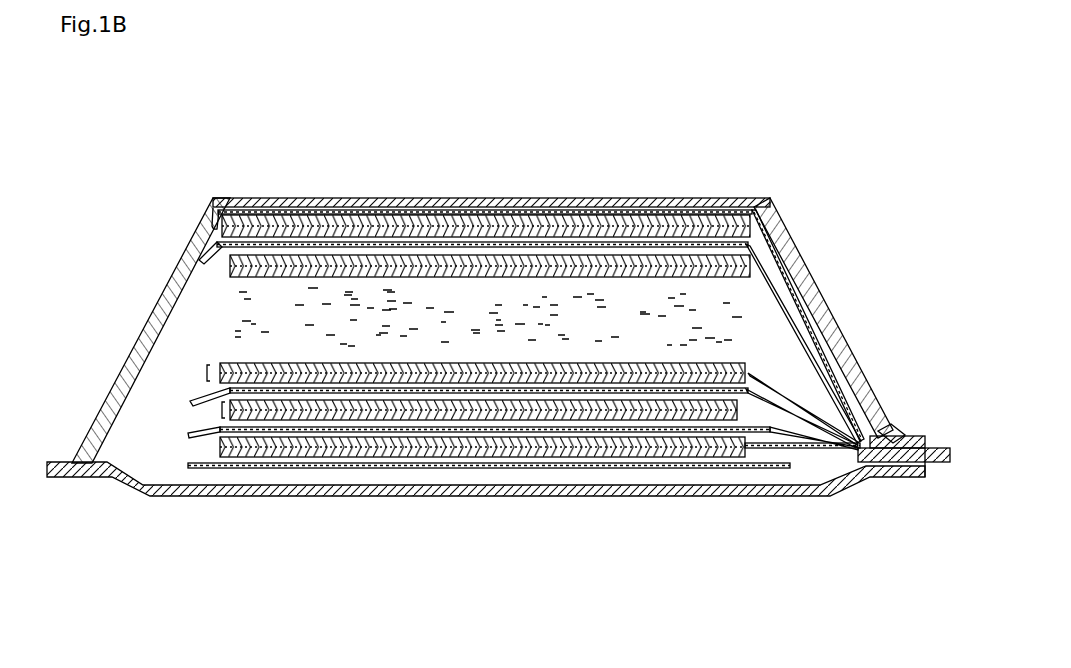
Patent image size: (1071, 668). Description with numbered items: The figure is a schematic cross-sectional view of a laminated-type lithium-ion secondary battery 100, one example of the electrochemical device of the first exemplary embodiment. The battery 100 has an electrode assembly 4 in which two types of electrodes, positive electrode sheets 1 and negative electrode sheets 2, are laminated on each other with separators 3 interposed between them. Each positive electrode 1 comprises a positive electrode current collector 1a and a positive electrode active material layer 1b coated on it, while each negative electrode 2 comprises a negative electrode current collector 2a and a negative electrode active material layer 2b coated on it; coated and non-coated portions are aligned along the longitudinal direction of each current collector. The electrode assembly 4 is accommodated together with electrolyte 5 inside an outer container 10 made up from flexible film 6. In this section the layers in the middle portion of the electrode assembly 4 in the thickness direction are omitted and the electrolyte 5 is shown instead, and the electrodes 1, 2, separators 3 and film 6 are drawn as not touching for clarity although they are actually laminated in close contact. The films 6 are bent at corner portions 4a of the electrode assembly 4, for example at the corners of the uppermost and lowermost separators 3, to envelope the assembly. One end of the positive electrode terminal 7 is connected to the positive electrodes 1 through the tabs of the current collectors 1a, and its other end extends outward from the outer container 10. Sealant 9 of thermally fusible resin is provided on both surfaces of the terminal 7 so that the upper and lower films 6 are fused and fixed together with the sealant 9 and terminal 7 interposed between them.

The positive electrode sheet 1 is at (220, 410).
The positive electrode current collector 1a is at (795, 405).
The positive electrode active material layer 1b is at (650, 262).
The negative electrode sheet 2 is at (205, 374).
The negative electrode current collector 2a is at (792, 402).
The negative electrode active material layer 2b is at (323, 236).
The separator 3 is at (207, 470).
The electrode assembly 4 is at (565, 480).
The corner portion of electrode assembly 4a is at (217, 203).
The electrolyte 5 is at (678, 298).
The flexible film 6 is at (370, 198).
The positive electrode terminal 7 is at (932, 468).
The sealant 9 is at (912, 444).
The outer container 10 is at (165, 275).
The laminated-type lithium-ion secondary battery 100 is at (479, 150).